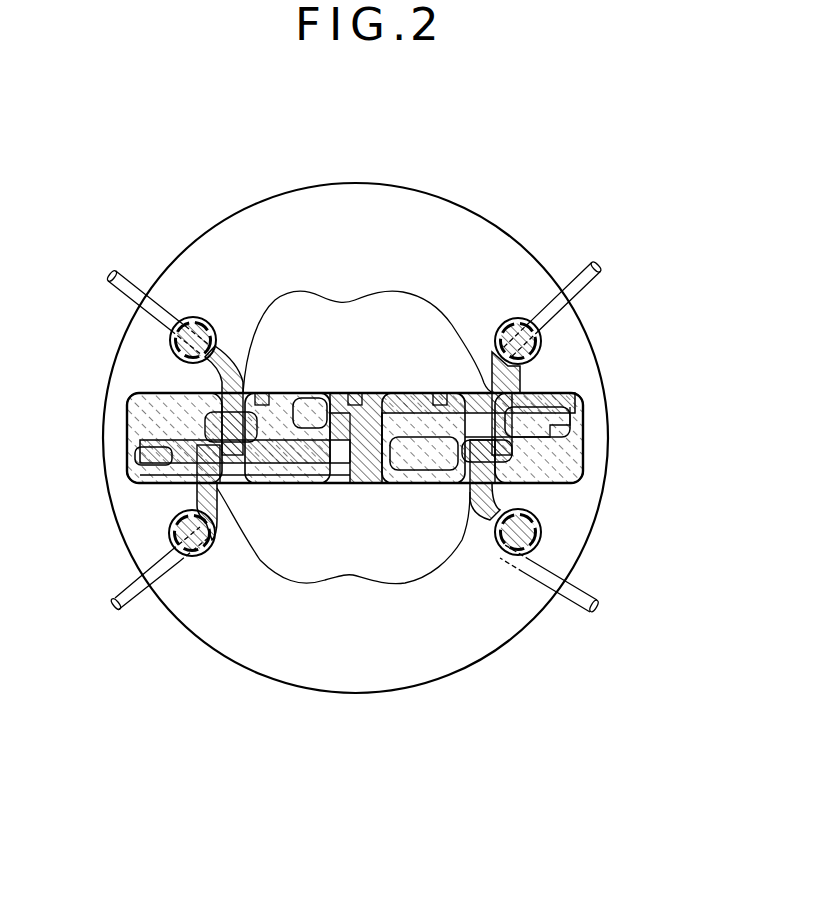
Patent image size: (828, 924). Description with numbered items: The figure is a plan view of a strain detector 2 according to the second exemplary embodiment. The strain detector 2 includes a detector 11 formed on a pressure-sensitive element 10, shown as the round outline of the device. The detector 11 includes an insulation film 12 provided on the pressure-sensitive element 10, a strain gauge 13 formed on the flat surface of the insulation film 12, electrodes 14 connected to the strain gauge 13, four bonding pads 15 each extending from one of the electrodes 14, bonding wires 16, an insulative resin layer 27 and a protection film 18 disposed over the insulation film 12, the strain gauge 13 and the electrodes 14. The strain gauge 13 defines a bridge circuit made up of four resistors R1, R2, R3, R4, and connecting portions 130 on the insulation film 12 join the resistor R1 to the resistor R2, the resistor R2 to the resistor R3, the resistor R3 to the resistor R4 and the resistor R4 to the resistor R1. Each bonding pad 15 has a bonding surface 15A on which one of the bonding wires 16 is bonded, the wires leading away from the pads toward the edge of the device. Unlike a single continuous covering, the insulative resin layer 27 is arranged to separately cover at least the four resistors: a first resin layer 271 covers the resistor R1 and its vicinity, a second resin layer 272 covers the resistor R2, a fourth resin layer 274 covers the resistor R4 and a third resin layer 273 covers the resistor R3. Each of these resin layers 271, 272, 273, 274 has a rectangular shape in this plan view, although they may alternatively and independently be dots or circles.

The strain detector 2 is at (518, 167).
The pressure-sensitive element 10 is at (337, 694).
The detector 11 is at (628, 410).
The insulation film 12 is at (265, 245).
The strain gauge 13 is at (357, 432).
The connecting portions 130 is at (438, 396).
The electrodes 14 is at (477, 527).
The bonding pads 15 is at (400, 438).
The bonding surface 15A is at (508, 557).
The bonding wires 16 is at (565, 652).
The protection film 18 is at (351, 578).
The insulative resin layer 27 is at (351, 446).
The first resin layer 271 is at (128, 400).
The second resin layer 272 is at (295, 392).
The third resin layer 273 is at (578, 480).
The fourth resin layer 274 is at (446, 470).
The resistor R1 is at (160, 425).
The resistor R2 is at (287, 397).
The resistor R3 is at (540, 438).
The resistor R4 is at (434, 448).